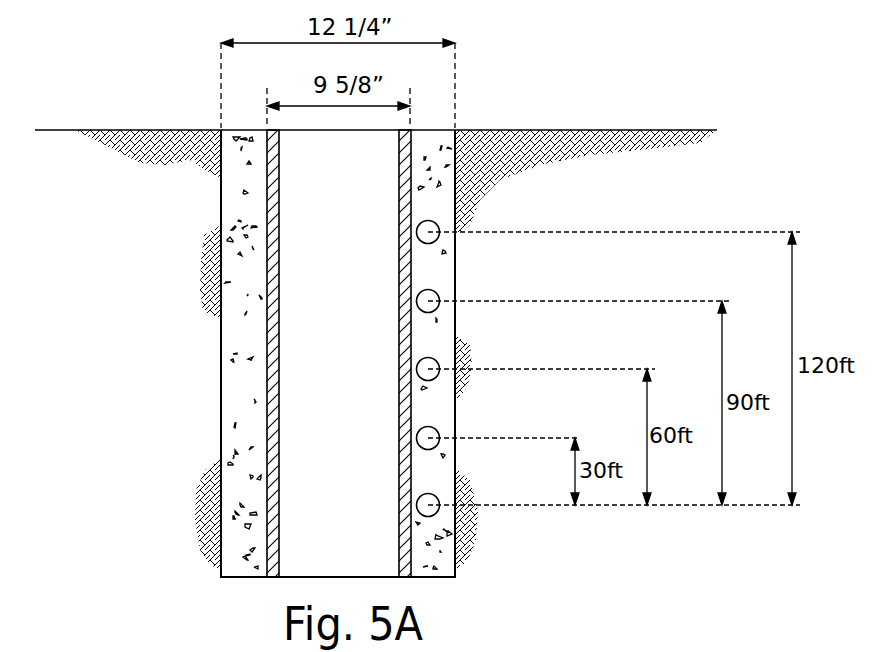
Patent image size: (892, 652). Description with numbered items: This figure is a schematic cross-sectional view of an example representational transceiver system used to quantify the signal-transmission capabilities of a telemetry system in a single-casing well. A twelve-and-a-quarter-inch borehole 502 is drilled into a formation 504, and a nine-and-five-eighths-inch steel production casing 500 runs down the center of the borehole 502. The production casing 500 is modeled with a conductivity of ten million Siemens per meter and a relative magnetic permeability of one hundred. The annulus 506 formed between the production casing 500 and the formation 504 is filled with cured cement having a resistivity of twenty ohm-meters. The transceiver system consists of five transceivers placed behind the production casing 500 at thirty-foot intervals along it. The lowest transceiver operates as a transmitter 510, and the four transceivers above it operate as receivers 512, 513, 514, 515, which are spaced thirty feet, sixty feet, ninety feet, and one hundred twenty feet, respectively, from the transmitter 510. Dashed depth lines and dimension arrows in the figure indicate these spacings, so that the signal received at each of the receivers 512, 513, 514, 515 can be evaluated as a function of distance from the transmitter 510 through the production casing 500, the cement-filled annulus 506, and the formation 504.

The production casing 500 is at (267, 232).
The borehole 502 is at (221, 334).
The formation 504 is at (75, 213).
The annulus 506 is at (243, 425).
The transmitter 510 is at (436, 513).
The receiver 512 is at (436, 446).
The receiver 513 is at (436, 377).
The receiver 514 is at (436, 309).
The receiver 515 is at (436, 240).